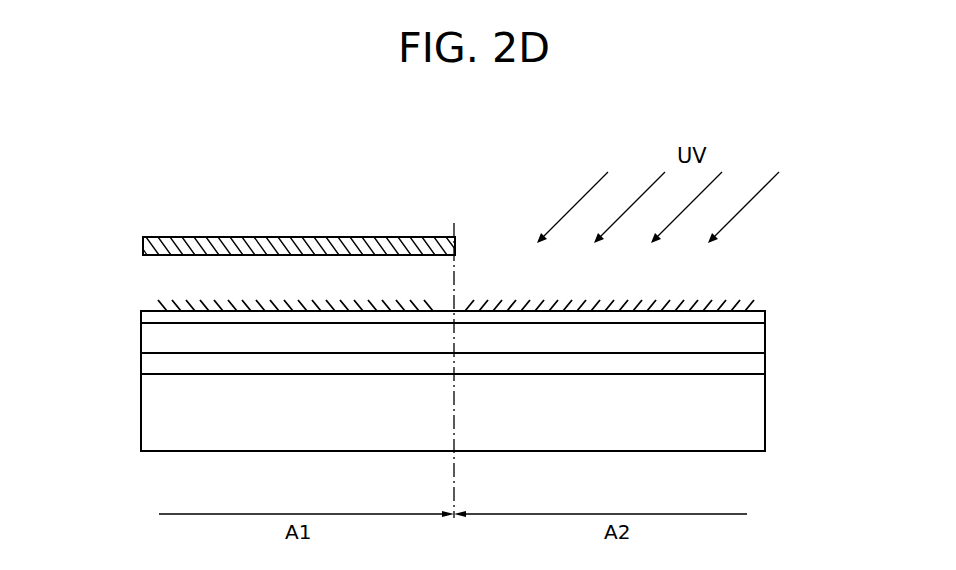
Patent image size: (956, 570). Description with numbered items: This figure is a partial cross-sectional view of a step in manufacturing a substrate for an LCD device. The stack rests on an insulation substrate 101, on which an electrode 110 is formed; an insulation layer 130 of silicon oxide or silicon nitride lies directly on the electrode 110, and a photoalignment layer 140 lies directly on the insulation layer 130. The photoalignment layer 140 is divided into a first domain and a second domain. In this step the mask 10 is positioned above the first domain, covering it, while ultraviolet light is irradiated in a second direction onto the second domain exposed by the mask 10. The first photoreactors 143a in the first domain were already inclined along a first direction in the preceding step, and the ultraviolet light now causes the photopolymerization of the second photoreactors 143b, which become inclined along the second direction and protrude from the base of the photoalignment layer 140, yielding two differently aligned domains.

The mask 10 is at (143, 244).
The insulation substrate 101 is at (765, 410).
The electrode 110 is at (765, 363).
The insulation layer 130 is at (765, 338).
The photoalignment layer 140 is at (765, 316).
The first photoreactors 143a is at (150, 306).
The second photoreactors 143b is at (757, 308).